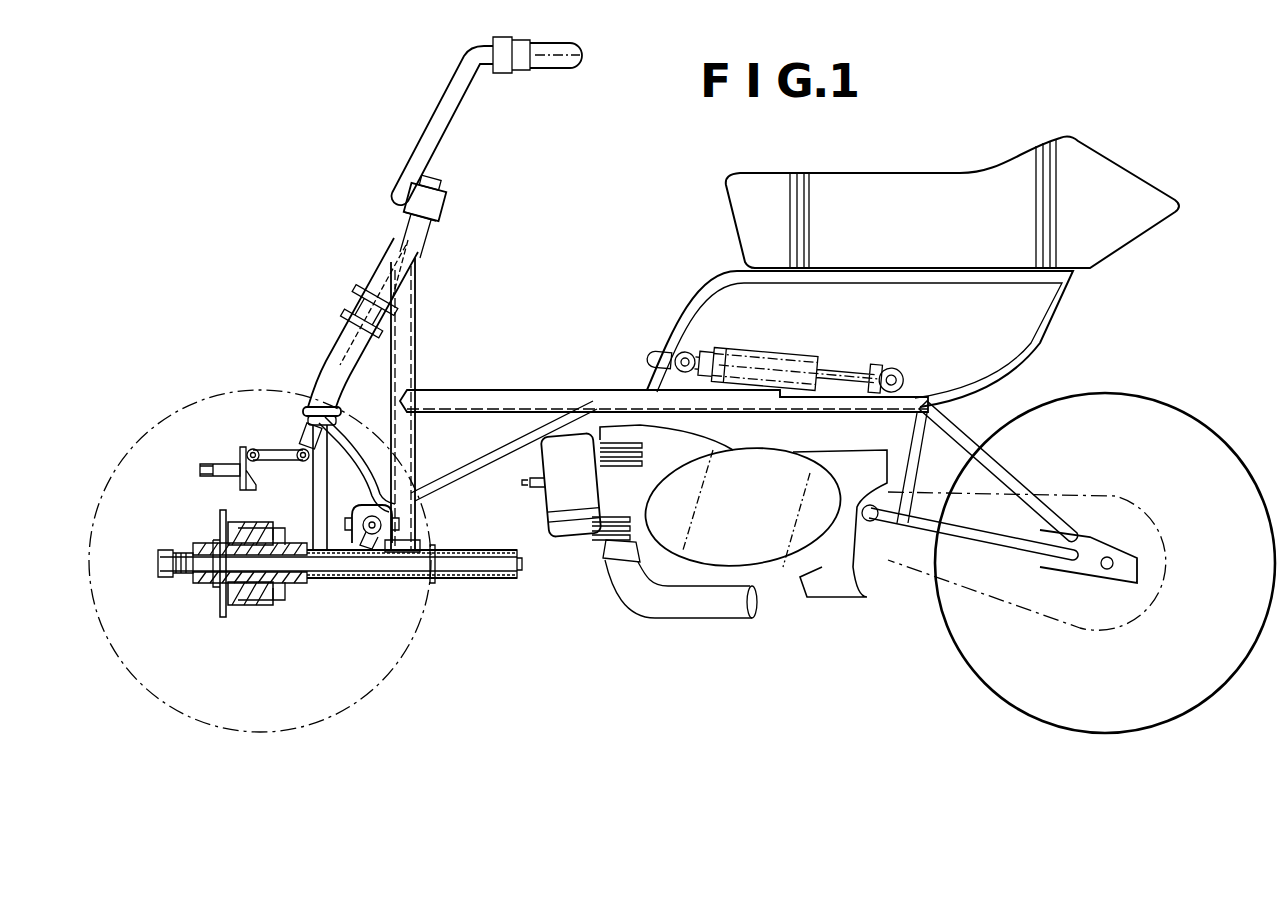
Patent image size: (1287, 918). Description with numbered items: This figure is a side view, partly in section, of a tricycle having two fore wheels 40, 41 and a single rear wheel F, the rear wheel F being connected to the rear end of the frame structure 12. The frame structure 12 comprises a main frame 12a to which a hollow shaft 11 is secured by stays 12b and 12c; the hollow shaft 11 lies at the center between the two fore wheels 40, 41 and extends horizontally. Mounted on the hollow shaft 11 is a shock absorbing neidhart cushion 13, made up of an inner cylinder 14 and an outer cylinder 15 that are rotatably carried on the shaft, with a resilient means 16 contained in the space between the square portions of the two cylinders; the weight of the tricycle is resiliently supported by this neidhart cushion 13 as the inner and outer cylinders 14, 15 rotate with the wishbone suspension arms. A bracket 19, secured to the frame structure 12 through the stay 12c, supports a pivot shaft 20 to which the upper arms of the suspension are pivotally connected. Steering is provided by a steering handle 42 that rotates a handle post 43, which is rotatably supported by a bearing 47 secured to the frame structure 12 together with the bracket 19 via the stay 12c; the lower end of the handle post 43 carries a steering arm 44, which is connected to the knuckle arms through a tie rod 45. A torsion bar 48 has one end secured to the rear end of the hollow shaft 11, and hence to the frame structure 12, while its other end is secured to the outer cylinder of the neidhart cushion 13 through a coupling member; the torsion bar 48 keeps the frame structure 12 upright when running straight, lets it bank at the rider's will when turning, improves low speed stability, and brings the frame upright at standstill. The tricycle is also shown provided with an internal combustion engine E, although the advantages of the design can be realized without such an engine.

The hollow shaft 11 is at (334, 580).
The frame structure 12 is at (550, 380).
The main frame 12a is at (467, 398).
The stay 12b is at (416, 442).
The stay 12c is at (345, 357).
The neidhart cushion 13 is at (250, 608).
The inner cylinder 14 is at (290, 585).
The outer cylinder 15 is at (232, 608).
The resilient means 16 is at (262, 607).
The bracket 19 is at (240, 457).
The pivot shaft 20 is at (227, 477).
The fore wheel 40 is at (266, 561).
The fore wheel 41 is at (367, 698).
The steering handle 42 is at (443, 135).
The handle post 43 is at (305, 410).
The steering arm 44 is at (354, 452).
The tie rod 45 is at (371, 548).
The bearing 47 is at (303, 437).
The torsion bar 48 is at (465, 580).
The internal combustion engine E is at (545, 500).
The rear wheel F is at (1222, 690).